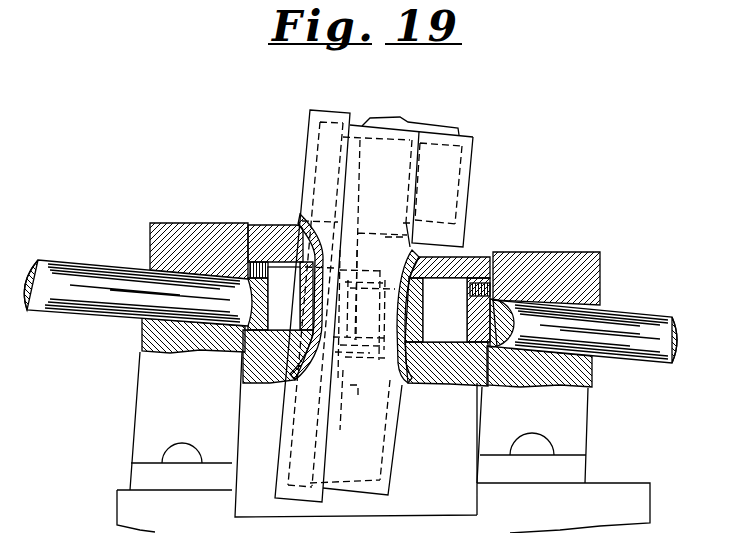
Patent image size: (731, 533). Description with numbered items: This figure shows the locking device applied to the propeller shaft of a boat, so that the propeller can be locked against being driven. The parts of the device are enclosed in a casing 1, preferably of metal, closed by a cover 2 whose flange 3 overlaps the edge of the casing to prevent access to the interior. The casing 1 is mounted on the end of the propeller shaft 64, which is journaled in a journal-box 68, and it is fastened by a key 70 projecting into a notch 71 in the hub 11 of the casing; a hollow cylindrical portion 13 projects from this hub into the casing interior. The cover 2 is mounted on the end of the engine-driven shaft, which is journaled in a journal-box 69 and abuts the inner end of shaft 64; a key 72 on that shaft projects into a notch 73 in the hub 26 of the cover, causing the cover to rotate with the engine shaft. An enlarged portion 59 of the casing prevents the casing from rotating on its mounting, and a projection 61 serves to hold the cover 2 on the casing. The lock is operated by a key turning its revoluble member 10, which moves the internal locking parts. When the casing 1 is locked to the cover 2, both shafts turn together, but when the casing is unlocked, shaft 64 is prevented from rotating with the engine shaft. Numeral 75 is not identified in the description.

The casing 1 is at (372, 448).
The cover 2 is at (281, 437).
The flange 3 is at (297, 498).
The revoluble member 10 is at (396, 116).
The hub 11 is at (449, 383).
The hollow cylindrical portion 13 is at (353, 391).
The hub 26 is at (277, 373).
The enlarged portion 59 is at (460, 183).
The projection 61 is at (74, 270).
The shaft 64 is at (645, 323).
The journal-box 68 is at (563, 392).
The journal-box 69 is at (182, 377).
The key 70 is at (445, 310).
The notch 71 is at (495, 253).
The key 72 is at (284, 298).
The notch 73 is at (260, 262).
The pin 75 is at (352, 225).